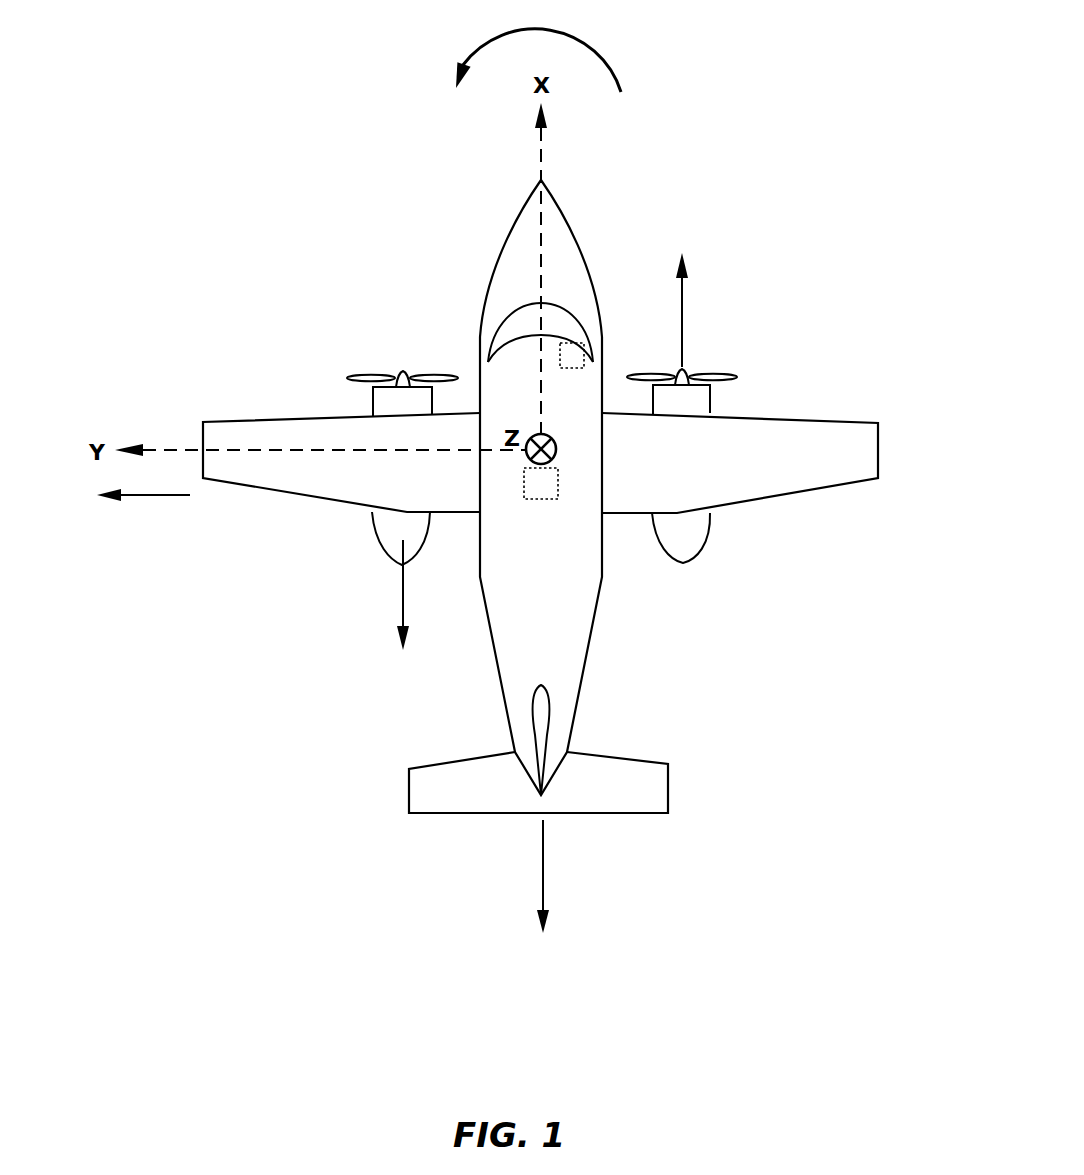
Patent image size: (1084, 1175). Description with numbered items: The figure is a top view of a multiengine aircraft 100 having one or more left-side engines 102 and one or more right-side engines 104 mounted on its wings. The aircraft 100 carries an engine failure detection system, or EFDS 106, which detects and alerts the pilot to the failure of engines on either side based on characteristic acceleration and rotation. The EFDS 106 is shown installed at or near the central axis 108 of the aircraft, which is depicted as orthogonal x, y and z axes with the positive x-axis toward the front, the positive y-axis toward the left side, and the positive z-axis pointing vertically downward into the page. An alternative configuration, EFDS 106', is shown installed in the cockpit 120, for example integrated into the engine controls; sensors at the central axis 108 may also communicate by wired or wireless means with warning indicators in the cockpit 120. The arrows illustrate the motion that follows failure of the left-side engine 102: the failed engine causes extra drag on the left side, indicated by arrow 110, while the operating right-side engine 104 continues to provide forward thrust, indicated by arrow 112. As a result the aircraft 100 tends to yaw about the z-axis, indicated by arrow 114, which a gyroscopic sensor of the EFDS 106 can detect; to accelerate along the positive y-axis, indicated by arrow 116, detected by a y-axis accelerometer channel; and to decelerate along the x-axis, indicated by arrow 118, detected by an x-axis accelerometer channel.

The multiengine aircraft 100 is at (806, 113).
The left-side engine 102 is at (373, 398).
The right-side engine 104 is at (712, 397).
The engine failure detection system (EFDS) 106 is at (534, 525).
The engine failure detection system (cockpit-installed configuration) 106' is at (611, 315).
The central axis 108 is at (515, 462).
The arrow indicating drag from failed left-side engine 110 is at (403, 602).
The arrow indicating forward thrust 112 is at (685, 309).
The arrow indicating yaw rotation 114 is at (602, 50).
The arrow indicating y-axis acceleration 116 is at (160, 496).
The arrow indicating x-axis deceleration 118 is at (543, 877).
The cockpit 120 is at (507, 292).